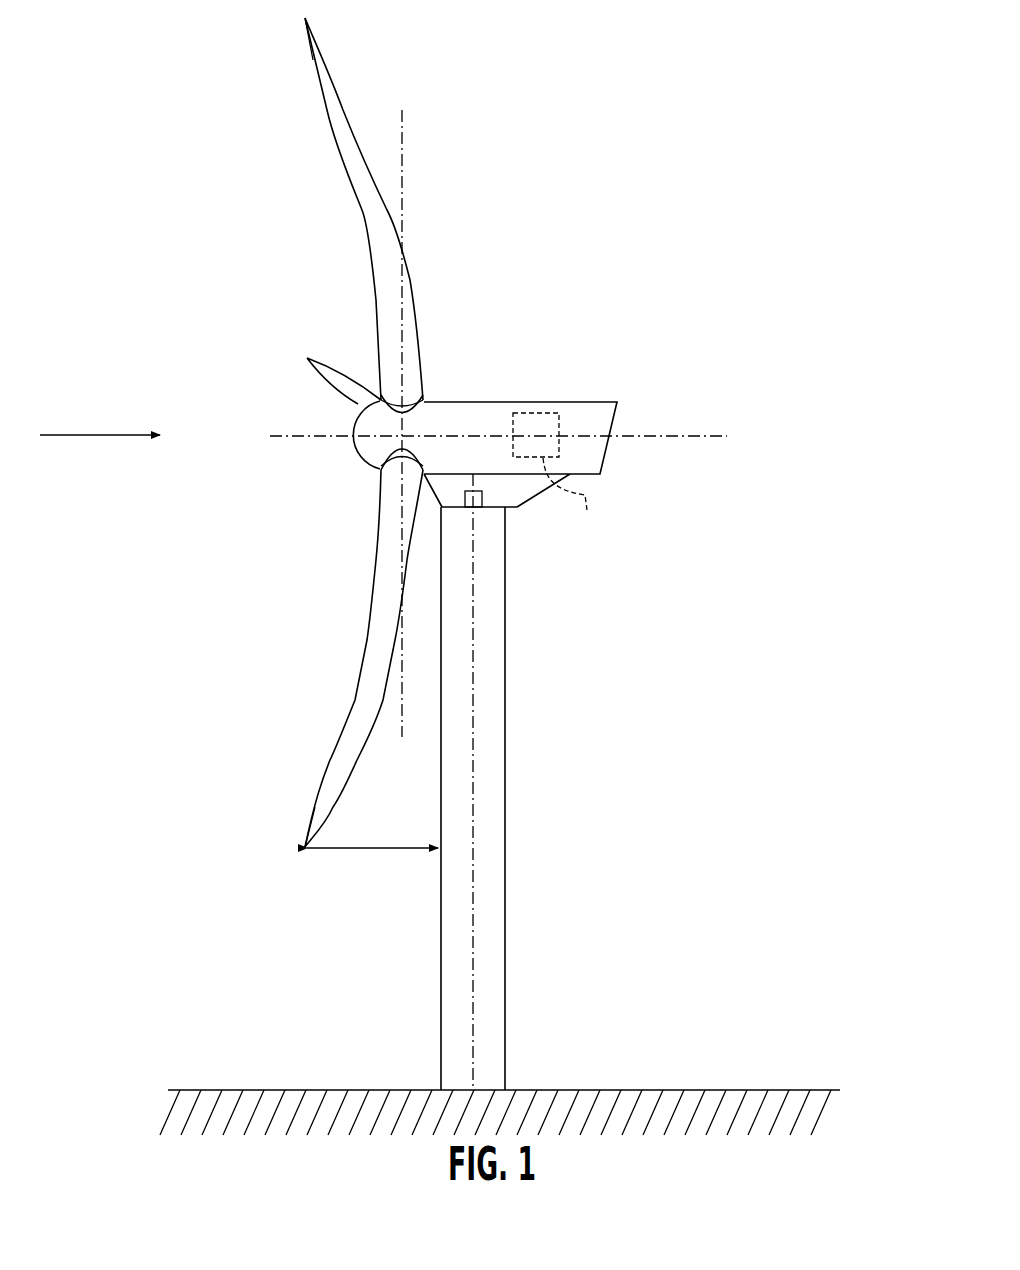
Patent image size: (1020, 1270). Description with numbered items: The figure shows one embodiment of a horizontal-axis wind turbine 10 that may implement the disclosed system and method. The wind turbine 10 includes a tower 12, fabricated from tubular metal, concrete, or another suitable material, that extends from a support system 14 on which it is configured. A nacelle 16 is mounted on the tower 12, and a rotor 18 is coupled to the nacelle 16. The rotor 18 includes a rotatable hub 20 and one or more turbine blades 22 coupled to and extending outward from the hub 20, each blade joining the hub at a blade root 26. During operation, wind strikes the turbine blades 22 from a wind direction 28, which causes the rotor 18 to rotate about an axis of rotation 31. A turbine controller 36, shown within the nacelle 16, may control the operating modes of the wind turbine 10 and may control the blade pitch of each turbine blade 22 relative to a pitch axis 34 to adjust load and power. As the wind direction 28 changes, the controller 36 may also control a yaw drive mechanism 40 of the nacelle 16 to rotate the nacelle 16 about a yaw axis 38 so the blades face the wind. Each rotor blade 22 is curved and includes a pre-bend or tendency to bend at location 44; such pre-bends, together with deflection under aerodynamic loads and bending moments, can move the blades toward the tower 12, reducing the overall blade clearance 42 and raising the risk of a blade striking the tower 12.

The wind turbine 10 is at (158, 230).
The tower 12 is at (505, 900).
The support system 14 is at (672, 1090).
The nacelle 16 is at (570, 402).
The rotor 18 is at (310, 428).
The rotatable hub 20 is at (343, 448).
The turbine blade 22 is at (378, 328).
The blade root 26 is at (428, 412).
The wind direction 28 is at (85, 435).
The axis of rotation 31 is at (583, 437).
The pitch axis 34 is at (397, 344).
The turbine controller 36 is at (570, 498).
The yaw axis 38 is at (473, 778).
The yaw drive mechanism 40 is at (480, 498).
The blade clearance 42 is at (402, 850).
The pre-bend location 44 is at (372, 232).